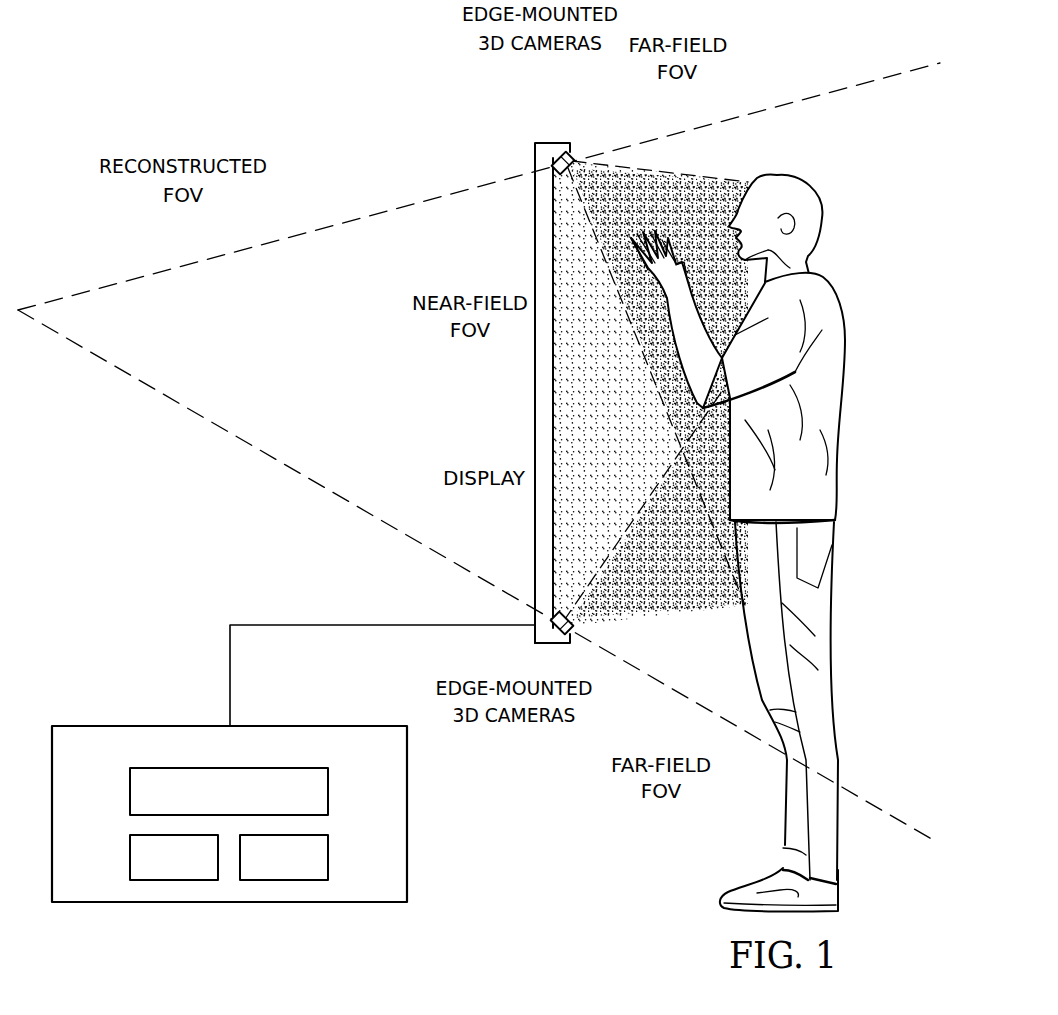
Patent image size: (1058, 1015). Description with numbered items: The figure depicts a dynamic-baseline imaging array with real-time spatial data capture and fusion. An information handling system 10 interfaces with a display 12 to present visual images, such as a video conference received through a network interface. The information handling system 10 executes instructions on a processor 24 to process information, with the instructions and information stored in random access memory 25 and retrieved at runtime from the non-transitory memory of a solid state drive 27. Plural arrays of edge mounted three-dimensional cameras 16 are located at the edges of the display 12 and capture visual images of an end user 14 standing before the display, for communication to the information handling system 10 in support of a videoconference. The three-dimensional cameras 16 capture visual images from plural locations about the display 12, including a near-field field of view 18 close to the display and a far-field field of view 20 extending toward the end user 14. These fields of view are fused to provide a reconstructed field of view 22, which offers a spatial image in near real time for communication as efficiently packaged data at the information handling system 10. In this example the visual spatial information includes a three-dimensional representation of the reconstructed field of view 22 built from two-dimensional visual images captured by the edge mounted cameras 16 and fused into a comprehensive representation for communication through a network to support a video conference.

The information handling system 10 is at (293, 763).
The display 12 is at (535, 437).
The end user 14 is at (846, 362).
The edge mounted three-dimensional cameras 16 is at (572, 158).
The near-field field of view 18 is at (553, 375).
The far-field field of view 20 is at (693, 182).
The reconstructed field of view 22 is at (206, 258).
The processor 24 is at (130, 795).
The random access memory 25 is at (130, 860).
The solid state drive 27 is at (330, 857).